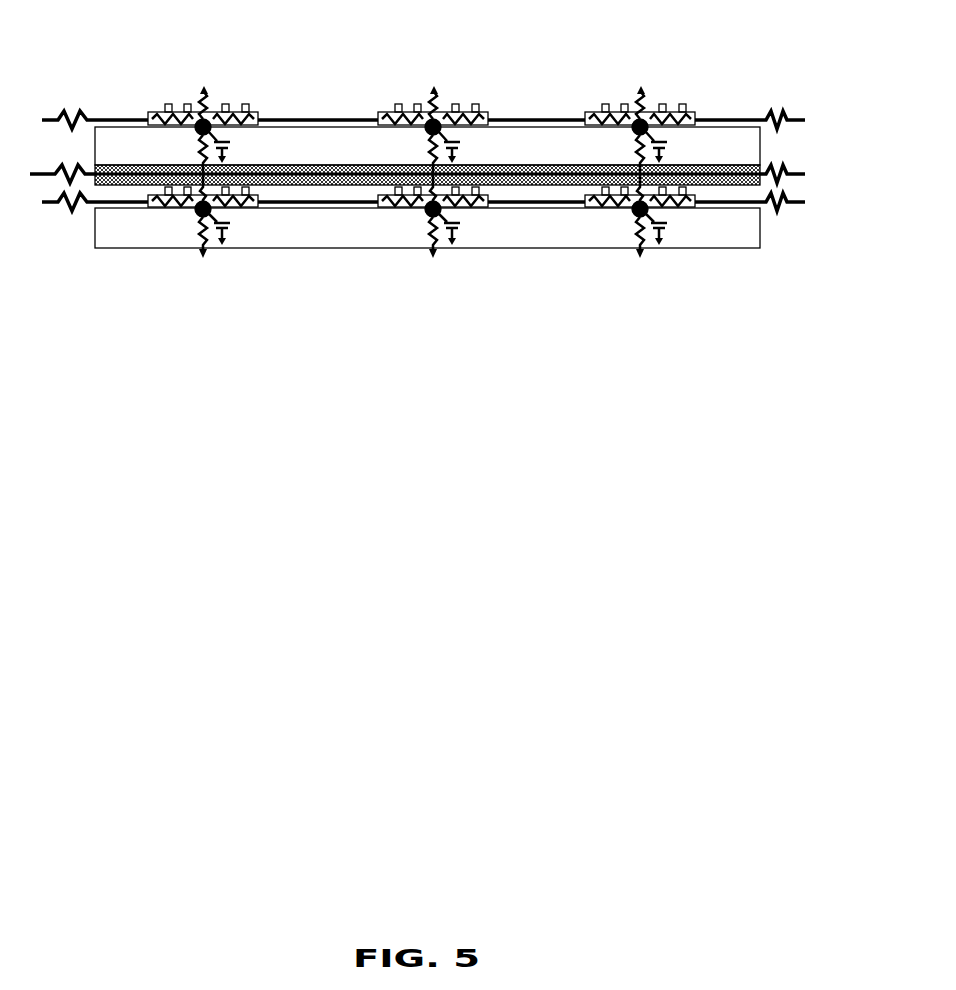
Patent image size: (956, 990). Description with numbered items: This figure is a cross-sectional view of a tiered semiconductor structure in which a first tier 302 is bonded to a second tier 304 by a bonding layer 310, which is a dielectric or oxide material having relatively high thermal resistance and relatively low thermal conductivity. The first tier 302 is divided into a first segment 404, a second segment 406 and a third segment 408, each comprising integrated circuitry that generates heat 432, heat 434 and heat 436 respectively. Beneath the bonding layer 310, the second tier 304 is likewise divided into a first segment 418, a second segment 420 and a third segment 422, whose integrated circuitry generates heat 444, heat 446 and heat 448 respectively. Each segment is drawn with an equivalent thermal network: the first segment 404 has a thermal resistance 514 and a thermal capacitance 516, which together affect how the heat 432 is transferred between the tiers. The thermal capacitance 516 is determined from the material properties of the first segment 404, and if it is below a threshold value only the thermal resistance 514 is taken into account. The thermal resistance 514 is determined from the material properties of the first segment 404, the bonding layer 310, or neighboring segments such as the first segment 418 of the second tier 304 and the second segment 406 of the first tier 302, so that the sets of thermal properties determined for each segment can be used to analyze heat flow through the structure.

The first tier 302 is at (762, 150).
The second tier 304 is at (762, 232).
The bonding layer 310 is at (105, 180).
The first segment 404 is at (205, 68).
The second segment 406 is at (428, 70).
The third segment 408 is at (638, 70).
The first segment 418 is at (205, 252).
The second segment 420 is at (435, 252).
The third segment 422 is at (643, 252).
The heat 432 is at (208, 122).
The heat 434 is at (440, 114).
The heat 436 is at (647, 118).
The heat 444 is at (201, 216).
The heat 446 is at (431, 216).
The heat 448 is at (636, 215).
The thermal resistance 514 is at (202, 90).
The thermal capacitance 516 is at (233, 143).